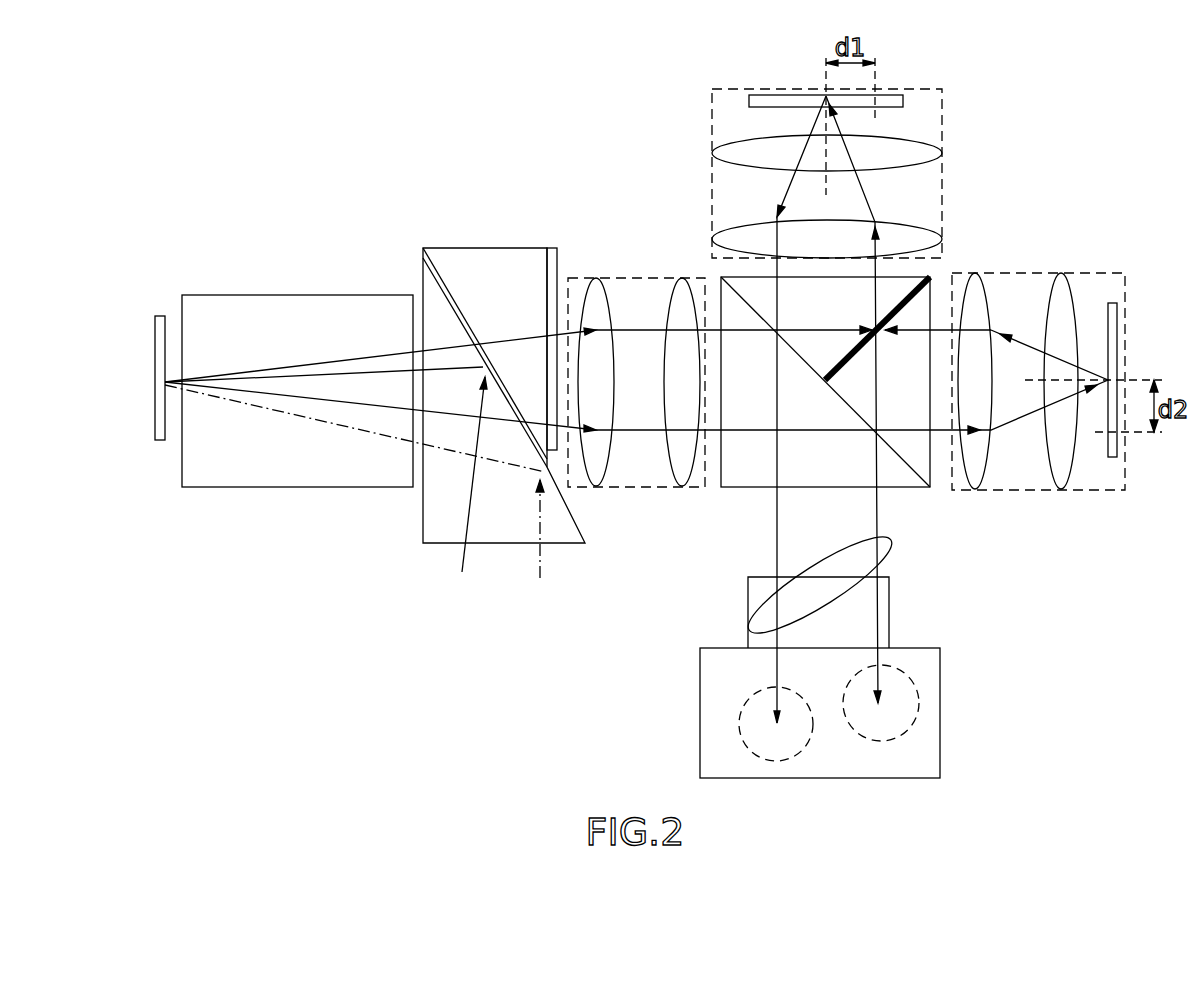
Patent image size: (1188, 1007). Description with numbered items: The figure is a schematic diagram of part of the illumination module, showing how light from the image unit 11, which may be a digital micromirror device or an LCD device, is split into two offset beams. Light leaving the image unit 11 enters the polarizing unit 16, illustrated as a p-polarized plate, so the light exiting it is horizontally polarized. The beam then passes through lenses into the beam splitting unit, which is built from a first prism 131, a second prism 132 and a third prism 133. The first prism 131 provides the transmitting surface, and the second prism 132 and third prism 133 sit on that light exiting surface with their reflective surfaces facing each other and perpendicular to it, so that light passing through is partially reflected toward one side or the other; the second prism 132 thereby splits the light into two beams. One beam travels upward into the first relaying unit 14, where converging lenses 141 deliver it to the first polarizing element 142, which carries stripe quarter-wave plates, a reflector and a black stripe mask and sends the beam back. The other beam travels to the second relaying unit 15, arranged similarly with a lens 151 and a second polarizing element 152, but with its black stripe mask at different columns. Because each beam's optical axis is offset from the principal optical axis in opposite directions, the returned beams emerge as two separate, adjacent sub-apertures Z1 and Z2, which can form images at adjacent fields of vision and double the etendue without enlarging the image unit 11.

The image unit 11 is at (155, 393).
The polarizing unit 16 is at (550, 248).
The first prism 131 is at (747, 470).
The second prism 132 is at (718, 277).
The third prism 133 is at (923, 462).
The first relaying unit 14 is at (771, 169).
The lens 141 is at (791, 152).
The first polarizing element 142 is at (749, 101).
The second relaying unit 15 is at (1048, 319).
The lens 151 is at (1060, 273).
The second polarizing element 152 is at (1112, 303).
The sub-aperture Z1 is at (740, 727).
The sub-aperture Z2 is at (917, 697).